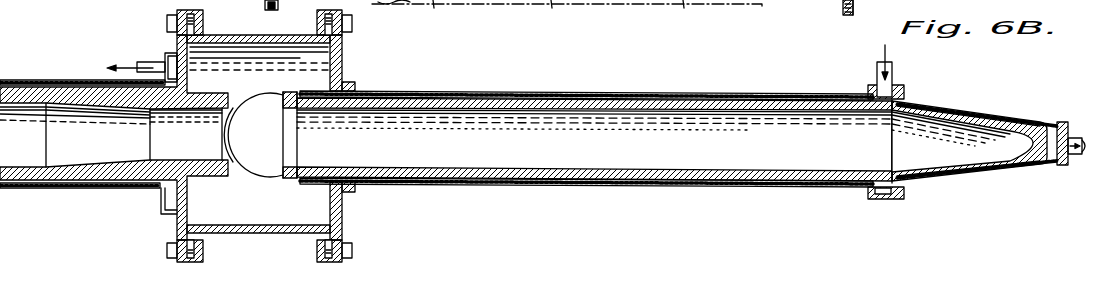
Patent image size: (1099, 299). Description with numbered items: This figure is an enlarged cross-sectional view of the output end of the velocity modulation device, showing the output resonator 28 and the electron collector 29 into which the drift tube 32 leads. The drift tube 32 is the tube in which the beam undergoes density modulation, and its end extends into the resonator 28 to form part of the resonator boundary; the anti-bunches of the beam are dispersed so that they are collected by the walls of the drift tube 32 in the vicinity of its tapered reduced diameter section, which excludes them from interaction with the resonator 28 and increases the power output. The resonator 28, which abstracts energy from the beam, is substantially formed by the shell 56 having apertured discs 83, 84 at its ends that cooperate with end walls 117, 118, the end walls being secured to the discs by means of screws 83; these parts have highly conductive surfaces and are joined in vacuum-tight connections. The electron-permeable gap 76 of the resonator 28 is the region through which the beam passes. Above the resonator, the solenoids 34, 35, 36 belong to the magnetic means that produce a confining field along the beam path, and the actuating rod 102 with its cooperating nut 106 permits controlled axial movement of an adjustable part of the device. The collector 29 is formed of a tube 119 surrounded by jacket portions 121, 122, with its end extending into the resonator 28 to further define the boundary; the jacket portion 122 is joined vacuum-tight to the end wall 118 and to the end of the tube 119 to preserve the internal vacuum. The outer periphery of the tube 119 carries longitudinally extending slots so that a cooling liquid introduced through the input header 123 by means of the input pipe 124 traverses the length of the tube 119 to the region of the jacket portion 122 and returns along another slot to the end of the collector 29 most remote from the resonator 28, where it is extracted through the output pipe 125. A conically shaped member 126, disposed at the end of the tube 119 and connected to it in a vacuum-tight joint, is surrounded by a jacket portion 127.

The resonator 28 is at (294, 159).
The electron collector 29 is at (587, 168).
The drift tube 32 is at (43, 86).
The solenoid 34 is at (434, 8).
The solenoid 35 is at (552, 8).
The solenoid 36 is at (684, 8).
The shell 56 is at (222, 234).
The gap 76 is at (253, 135).
The apertured disc 83 is at (201, 13).
The apertured disc 84 is at (318, 12).
The actuating rod 102 is at (842, 8).
The nut 106 is at (856, 2).
The end wall 117 is at (175, 229).
The end wall 118 is at (339, 212).
The tube 119 is at (480, 178).
The jacket portion 121 is at (416, 187).
The jacket portion 122 is at (313, 187).
The input header 123 is at (880, 201).
The input pipe 124 is at (878, 78).
The output pipe 125 is at (1080, 162).
The conically shaped member 126 is at (982, 175).
The jacket portion 127 is at (928, 186).